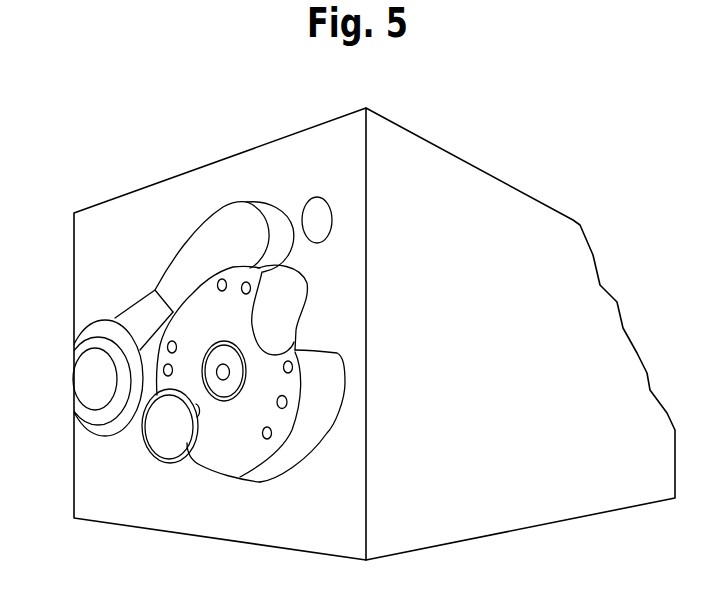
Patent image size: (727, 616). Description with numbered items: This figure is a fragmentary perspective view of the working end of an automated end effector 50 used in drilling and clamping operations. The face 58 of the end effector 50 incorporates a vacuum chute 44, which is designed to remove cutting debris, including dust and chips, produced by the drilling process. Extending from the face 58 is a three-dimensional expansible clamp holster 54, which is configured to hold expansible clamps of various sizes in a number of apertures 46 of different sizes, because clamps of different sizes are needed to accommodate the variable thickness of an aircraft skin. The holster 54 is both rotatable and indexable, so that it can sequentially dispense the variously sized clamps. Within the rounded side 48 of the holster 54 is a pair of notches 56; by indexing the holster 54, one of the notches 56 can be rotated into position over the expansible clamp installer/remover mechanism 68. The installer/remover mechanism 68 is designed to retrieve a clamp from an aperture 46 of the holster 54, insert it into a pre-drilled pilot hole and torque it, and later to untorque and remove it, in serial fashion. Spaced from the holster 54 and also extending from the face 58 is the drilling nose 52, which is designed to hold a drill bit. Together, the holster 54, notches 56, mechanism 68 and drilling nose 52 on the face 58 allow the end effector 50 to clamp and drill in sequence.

The vacuum chute 44 is at (228, 237).
The apertures 46 is at (290, 400).
The rounded side 48 is at (293, 455).
The end effector 50 is at (483, 198).
The drilling nose 52 is at (83, 382).
The expansible clamp holster 54 is at (232, 448).
The notches 56 is at (280, 300).
The face 58 is at (115, 237).
The expansible clamp installer/remover mechanism 68 is at (158, 447).